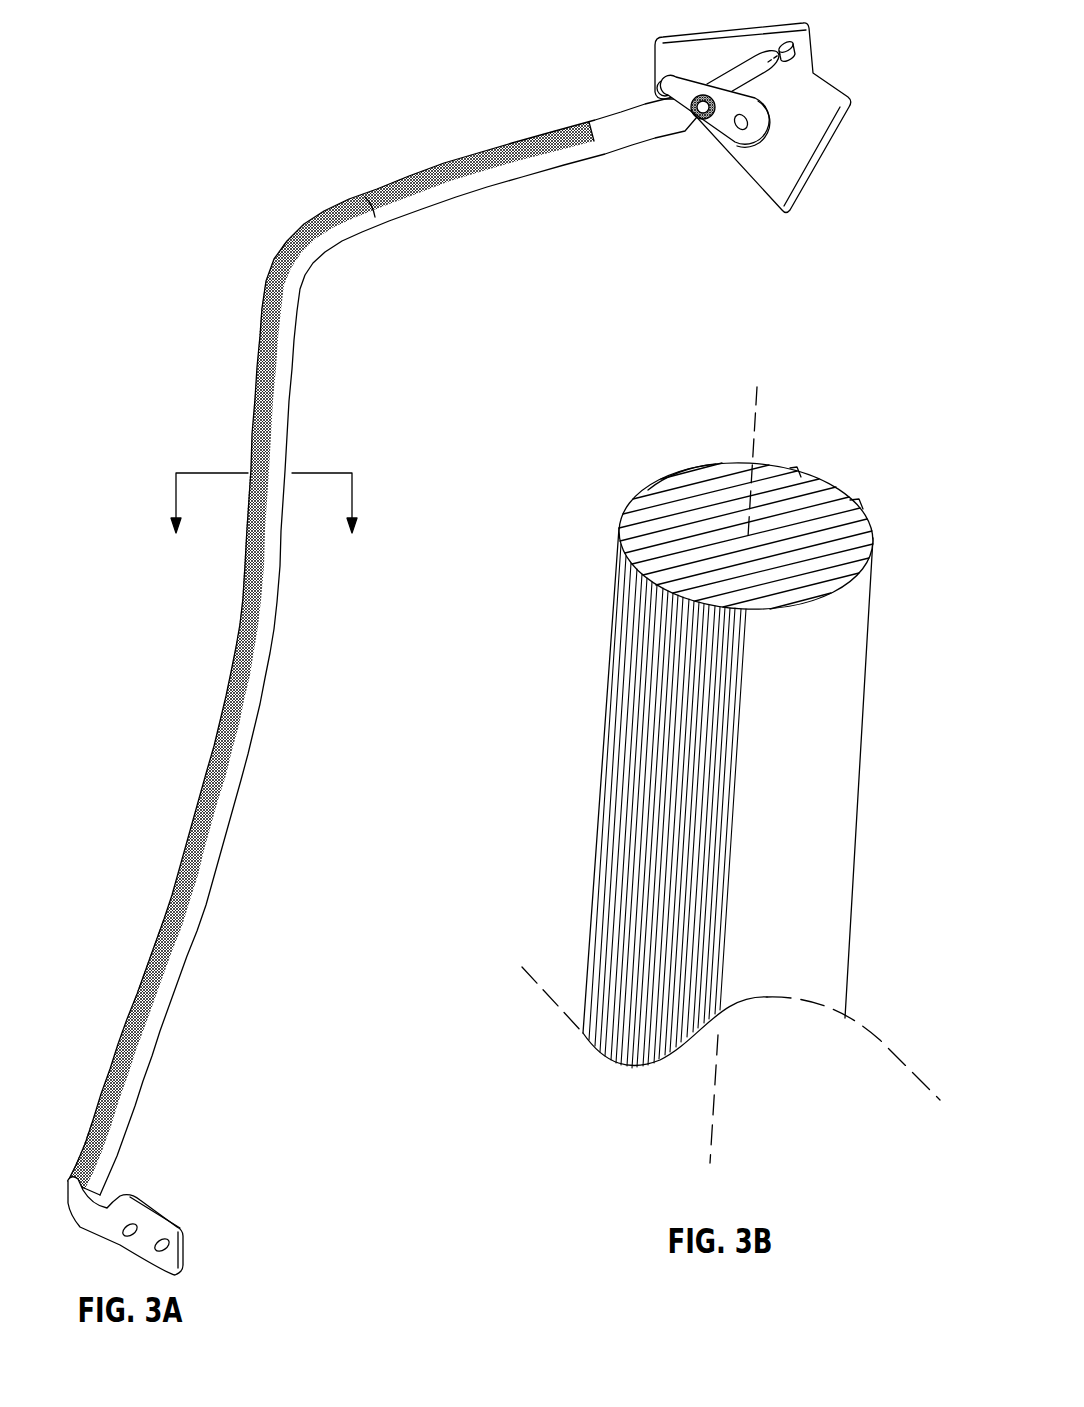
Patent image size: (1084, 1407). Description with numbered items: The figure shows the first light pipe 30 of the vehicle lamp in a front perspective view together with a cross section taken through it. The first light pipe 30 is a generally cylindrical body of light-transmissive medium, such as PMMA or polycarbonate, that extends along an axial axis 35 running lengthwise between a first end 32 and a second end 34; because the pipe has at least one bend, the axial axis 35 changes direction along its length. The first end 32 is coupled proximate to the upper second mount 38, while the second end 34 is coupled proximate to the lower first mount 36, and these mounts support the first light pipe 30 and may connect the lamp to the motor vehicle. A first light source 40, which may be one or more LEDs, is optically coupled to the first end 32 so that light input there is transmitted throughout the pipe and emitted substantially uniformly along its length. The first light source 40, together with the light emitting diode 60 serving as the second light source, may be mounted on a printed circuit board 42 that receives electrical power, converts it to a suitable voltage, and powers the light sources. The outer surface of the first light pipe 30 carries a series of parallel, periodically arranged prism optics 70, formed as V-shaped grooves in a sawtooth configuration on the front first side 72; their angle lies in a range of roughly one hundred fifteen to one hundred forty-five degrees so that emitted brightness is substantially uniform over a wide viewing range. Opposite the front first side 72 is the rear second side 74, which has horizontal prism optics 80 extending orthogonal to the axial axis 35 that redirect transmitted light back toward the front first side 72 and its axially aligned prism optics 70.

In FIG. 3A, the first light pipe 30 is at (227, 233).
In FIG. 3B, the first light pipe 30 is at (660, 457).
In FIG. 3A, the first end 32 is at (678, 45).
In FIG. 3A, the second end 34 is at (70, 1180).
In FIG. 3B, the axial axis 35 is at (750, 400).
In FIG. 3A, the first mount 36 is at (170, 1227).
In FIG. 3A, the second mount 38 is at (747, 142).
In FIG. 3A, the first light source 40 is at (797, 48).
In FIG. 3A, the printed circuit board 42 is at (827, 108).
In FIG. 3A, the light emitting diode 60 is at (660, 87).
In FIG. 3A, the prism optics 70 is at (432, 180).
In FIG. 3B, the prism optics 70 is at (620, 778).
In FIG. 3B, the front first side 72 is at (657, 587).
In FIG. 3B, the rear second side 74 is at (860, 502).
In FIG. 3B, the horizontal prism optics 80 is at (817, 483).